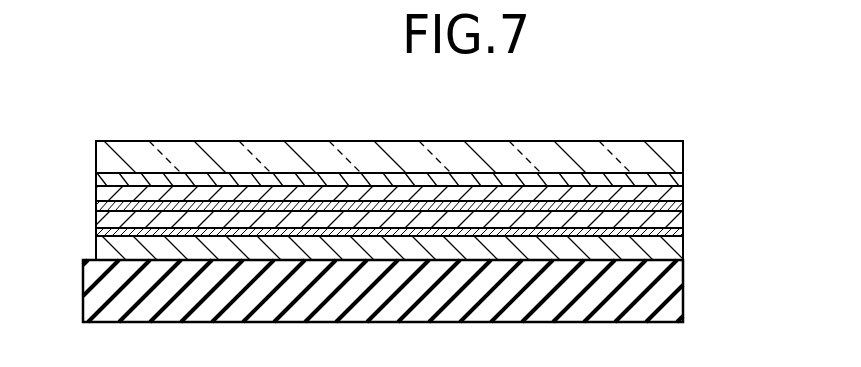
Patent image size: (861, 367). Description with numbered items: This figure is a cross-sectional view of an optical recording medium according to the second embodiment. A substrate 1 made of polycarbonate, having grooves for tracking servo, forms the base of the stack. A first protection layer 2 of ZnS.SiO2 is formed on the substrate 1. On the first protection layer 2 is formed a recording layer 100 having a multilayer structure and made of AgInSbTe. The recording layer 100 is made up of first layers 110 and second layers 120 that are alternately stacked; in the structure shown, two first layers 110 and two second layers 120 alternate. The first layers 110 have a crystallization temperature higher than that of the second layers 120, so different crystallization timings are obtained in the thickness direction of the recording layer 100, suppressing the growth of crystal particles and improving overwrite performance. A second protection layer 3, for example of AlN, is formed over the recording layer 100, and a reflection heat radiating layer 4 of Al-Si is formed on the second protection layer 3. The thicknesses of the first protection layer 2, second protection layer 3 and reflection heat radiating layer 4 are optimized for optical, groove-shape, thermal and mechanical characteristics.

The substrate 1 is at (683, 290).
The first protection layer 2 is at (683, 248).
The second protection layer 3 is at (684, 174).
The reflection heat radiating layer 4 is at (680, 157).
The recording layer 100 is at (417, 205).
The first layers 110 is at (683, 203).
The second layers 120 is at (684, 190).